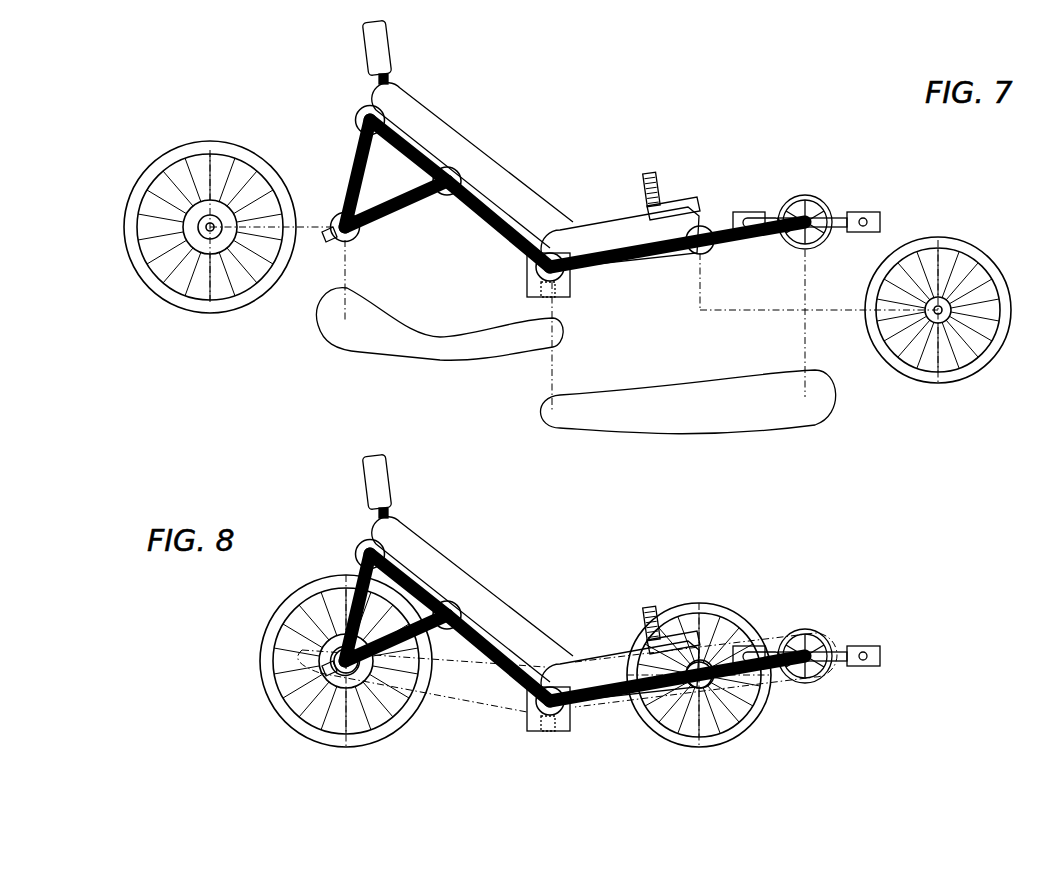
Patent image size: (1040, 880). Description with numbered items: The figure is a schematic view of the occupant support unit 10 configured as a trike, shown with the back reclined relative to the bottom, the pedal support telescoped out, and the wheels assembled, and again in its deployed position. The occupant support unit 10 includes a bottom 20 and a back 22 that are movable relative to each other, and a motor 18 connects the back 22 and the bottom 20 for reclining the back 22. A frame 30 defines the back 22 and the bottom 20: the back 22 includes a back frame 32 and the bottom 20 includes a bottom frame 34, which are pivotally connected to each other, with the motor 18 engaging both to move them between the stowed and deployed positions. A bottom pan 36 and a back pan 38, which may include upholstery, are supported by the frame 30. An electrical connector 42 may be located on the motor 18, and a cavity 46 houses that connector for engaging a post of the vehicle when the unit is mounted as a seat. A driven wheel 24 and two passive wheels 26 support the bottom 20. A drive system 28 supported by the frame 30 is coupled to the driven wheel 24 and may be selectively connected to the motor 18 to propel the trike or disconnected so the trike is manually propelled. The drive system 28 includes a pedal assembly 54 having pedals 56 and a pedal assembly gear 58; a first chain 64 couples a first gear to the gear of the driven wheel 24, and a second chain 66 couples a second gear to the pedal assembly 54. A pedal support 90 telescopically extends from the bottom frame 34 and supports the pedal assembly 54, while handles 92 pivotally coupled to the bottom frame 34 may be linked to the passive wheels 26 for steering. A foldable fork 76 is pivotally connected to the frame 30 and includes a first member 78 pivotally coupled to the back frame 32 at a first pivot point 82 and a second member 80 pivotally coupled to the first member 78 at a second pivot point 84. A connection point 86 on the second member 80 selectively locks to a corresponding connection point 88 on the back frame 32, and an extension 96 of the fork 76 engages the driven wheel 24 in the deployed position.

In FIG. 7, the occupant support unit 10 is at (605, 85).
In FIG. 8, the occupant support unit 10 is at (605, 520).
In FIG. 7, the motor 18 is at (527, 278).
In FIG. 8, the motor 18 is at (526, 698).
In FIG. 7, the bottom 20 is at (614, 175).
In FIG. 8, the bottom 20 is at (627, 624).
In FIG. 7, the back 22 is at (480, 108).
In FIG. 8, the back 22 is at (467, 568).
In FIG. 7, the driven wheel 24 is at (156, 170).
In FIG. 8, the driven wheel 24 is at (262, 686).
In FIG. 7, the passive wheels 26 is at (966, 247).
In FIG. 8, the passive wheels 26 is at (718, 604).
In FIG. 8, the drive system 28 is at (470, 732).
In FIG. 7, the frame 30 is at (495, 239).
In FIG. 8, the frame 30 is at (626, 666).
In FIG. 7, the back frame 32 is at (483, 225).
In FIG. 8, the back frame 32 is at (498, 634).
In FIG. 7, the bottom frame 34 is at (599, 262).
In FIG. 8, the bottom frame 34 is at (677, 711).
In FIG. 7, the bottom pan 36 is at (608, 229).
In FIG. 8, the bottom pan 36 is at (620, 660).
In FIG. 7, the back pan 38 is at (421, 104).
In FIG. 8, the back pan 38 is at (467, 568).
In FIG. 7, the electrical connector 42 is at (540, 285).
In FIG. 8, the electrical connector 42 is at (517, 728).
In FIG. 7, the cavity 46 is at (525, 289).
In FIG. 8, the cavity 46 is at (525, 726).
In FIG. 7, the pedal assembly 54 is at (856, 192).
In FIG. 8, the pedal assembly 54 is at (823, 662).
In FIG. 7, the pedals 56 is at (875, 212).
In FIG. 8, the pedals 56 is at (880, 638).
In FIG. 7, the pedal assembly gear 58 is at (806, 196).
In FIG. 8, the pedal assembly gear 58 is at (816, 629).
In FIG. 7, the first chain 64 is at (346, 350).
In FIG. 8, the first chain 64 is at (465, 705).
In FIG. 7, the second chain 66 is at (770, 437).
In FIG. 8, the second chain 66 is at (772, 628).
In FIG. 7, the fork 76 is at (326, 135).
In FIG. 8, the fork 76 is at (374, 627).
In FIG. 7, the first member 78 is at (388, 212).
In FIG. 8, the first member 78 is at (390, 695).
In FIG. 7, the second member 80 is at (352, 178).
In FIG. 8, the second member 80 is at (319, 607).
In FIG. 7, the first pivot point 82 is at (456, 170).
In FIG. 8, the first pivot point 82 is at (478, 585).
In FIG. 7, the second pivot point 84 is at (358, 237).
In FIG. 8, the second pivot point 84 is at (316, 710).
In FIG. 7, the connection point 86 is at (366, 108).
In FIG. 8, the connection point 86 is at (324, 524).
In FIG. 7, the connection point 88 is at (370, 120).
In FIG. 8, the connection point 88 is at (370, 554).
In FIG. 7, the pedal support 90 is at (733, 240).
In FIG. 8, the pedal support 90 is at (770, 698).
In FIG. 7, the handles 92 is at (691, 205).
In FIG. 8, the handles 92 is at (671, 609).
In FIG. 7, the extension 96 is at (325, 239).
In FIG. 8, the extension 96 is at (281, 641).